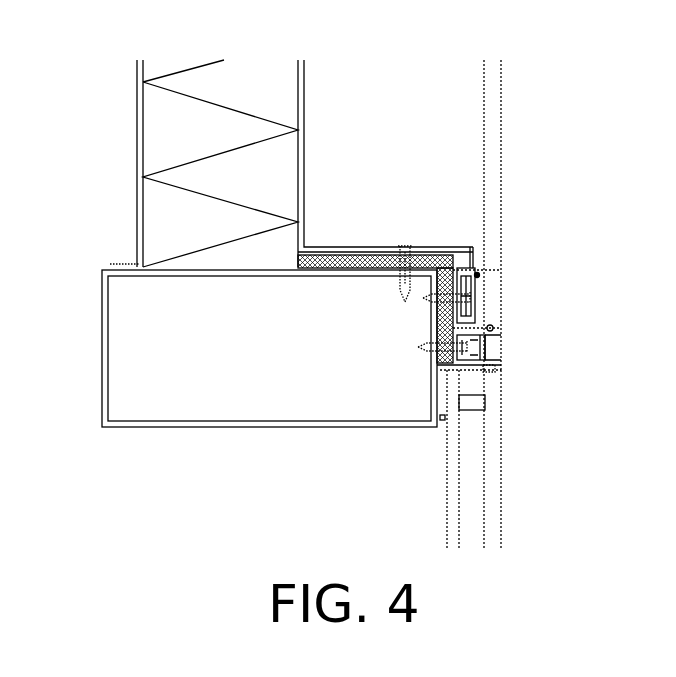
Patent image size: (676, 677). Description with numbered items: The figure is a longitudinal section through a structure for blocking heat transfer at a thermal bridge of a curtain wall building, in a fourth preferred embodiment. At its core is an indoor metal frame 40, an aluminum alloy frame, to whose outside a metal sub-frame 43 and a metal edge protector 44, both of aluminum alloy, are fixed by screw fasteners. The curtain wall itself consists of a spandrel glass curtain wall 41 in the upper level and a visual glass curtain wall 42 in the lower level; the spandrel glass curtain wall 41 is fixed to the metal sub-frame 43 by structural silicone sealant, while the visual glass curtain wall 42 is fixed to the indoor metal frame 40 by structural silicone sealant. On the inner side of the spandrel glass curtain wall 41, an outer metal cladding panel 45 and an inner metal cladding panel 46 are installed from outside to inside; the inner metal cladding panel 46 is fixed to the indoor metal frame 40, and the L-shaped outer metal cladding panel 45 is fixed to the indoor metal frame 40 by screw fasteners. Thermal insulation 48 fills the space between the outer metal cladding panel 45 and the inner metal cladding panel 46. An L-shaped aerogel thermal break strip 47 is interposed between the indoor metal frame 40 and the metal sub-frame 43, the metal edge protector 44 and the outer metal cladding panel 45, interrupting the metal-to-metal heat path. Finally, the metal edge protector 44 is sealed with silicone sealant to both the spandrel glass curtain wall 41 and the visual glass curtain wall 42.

The indoor metal frame 40 is at (108, 343).
The spandrel glass curtain wall 41 is at (490, 177).
The visual glass curtain wall 42 is at (492, 433).
The metal sub-frame 43 is at (477, 275).
The metal edge protector 44 is at (485, 348).
The outer metal cladding panel 45 is at (298, 210).
The inner metal cladding panel 46 is at (143, 130).
The aerogel thermal break strip 47 is at (472, 248).
The thermal insulation 48 is at (195, 107).